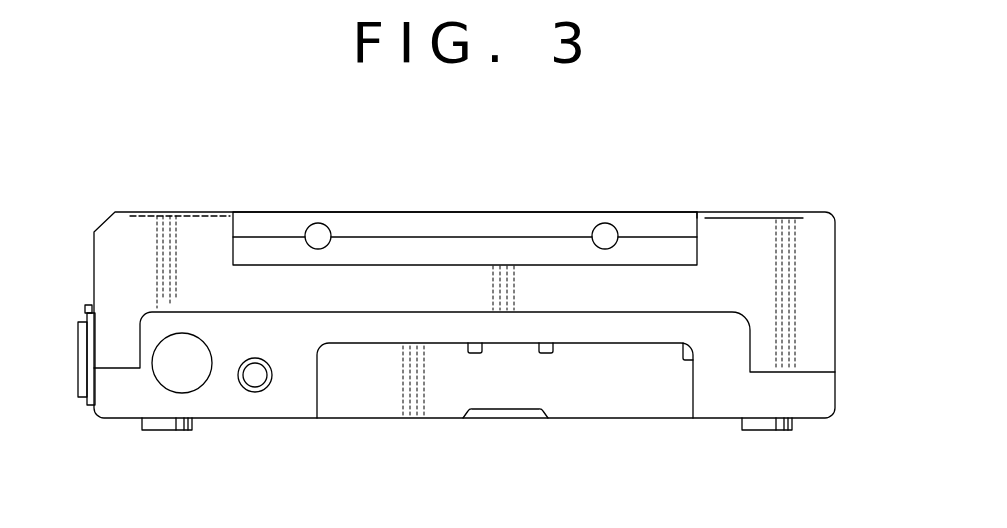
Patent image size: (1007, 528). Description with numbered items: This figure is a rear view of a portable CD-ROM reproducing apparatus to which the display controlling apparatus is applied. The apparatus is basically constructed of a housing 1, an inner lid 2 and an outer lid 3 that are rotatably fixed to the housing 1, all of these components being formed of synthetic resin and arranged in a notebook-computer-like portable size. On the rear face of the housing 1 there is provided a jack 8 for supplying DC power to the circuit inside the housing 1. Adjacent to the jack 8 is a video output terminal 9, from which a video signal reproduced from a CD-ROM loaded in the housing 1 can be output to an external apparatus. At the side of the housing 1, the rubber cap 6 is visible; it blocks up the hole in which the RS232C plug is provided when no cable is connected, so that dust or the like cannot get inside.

The housing 1 is at (812, 398).
The inner lid 2 is at (765, 228).
The outer lid 3 is at (650, 225).
The rubber cap 6 is at (78, 347).
The jack 8 is at (257, 378).
The video output terminal 9 is at (200, 378).